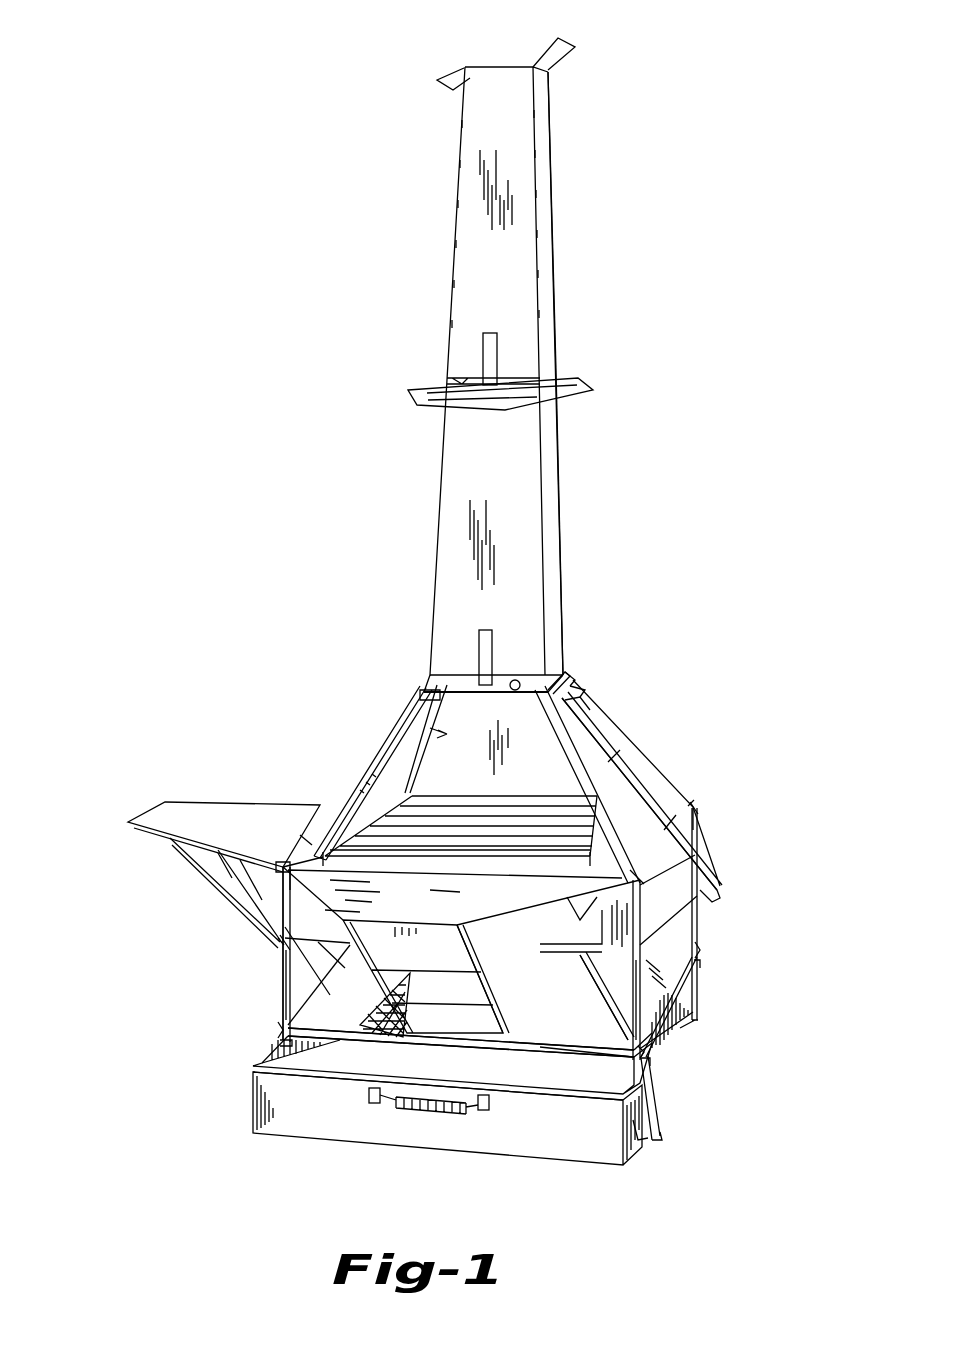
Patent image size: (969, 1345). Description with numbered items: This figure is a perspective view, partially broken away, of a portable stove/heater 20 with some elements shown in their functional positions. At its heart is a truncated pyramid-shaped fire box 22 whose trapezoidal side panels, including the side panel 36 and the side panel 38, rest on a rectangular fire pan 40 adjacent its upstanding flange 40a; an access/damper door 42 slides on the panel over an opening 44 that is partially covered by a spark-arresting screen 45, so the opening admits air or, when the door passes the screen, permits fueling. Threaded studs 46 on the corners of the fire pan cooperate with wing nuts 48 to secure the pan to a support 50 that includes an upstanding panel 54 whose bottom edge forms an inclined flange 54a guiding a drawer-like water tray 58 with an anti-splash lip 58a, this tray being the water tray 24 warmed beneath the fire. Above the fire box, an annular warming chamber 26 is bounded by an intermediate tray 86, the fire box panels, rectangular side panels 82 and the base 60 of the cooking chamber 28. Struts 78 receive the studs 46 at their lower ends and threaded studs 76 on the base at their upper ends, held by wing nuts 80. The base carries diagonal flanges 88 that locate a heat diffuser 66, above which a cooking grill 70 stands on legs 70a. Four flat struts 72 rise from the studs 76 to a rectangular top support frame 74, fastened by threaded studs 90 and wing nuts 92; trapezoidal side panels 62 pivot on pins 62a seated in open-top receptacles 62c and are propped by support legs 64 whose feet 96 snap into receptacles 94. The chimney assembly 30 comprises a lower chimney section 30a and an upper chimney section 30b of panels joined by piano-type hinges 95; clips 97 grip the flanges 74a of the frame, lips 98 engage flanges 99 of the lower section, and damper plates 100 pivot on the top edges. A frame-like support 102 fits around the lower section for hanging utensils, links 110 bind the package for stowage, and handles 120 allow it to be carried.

The stove/heater 20 is at (258, 268).
The fire box 22 is at (680, 934).
The rectangular water tray 24 is at (232, 1116).
The annular warming chamber 26 is at (498, 975).
The cooking chamber 28 is at (430, 728).
The chimney assembly 30 is at (614, 298).
The lower chimney section 30a is at (560, 520).
The upper chimney section 30b is at (552, 115).
The side panel 36 is at (675, 958).
The side panel 38 is at (320, 1000).
The fire pan 40 is at (566, 1075).
The upstanding flange 40a is at (492, 1052).
The access/damper door 42 is at (588, 1032).
The opening 44 is at (362, 1012).
The spark-arresting screen 45 is at (392, 1030).
The threaded studs 46 is at (270, 1030).
The wing nuts 48 is at (280, 1042).
The support 50 is at (710, 1023).
The upstanding panel 54 is at (680, 1028).
The inclined flange 54a is at (638, 1140).
The water tray 58 is at (598, 1165).
The anti-splash lip 58a is at (272, 1060).
The base 60 is at (367, 810).
The side panels 62 is at (457, 715).
The pins 62a is at (540, 920).
The open-top receptacles 62c is at (282, 862).
The support legs 64 is at (630, 747).
The heat diffuser 66 is at (470, 825).
The cooking grill 70 is at (538, 820).
The legs 70a is at (570, 872).
The flat struts 72 is at (407, 750).
The top support frame 74 is at (455, 685).
The laterally extending flanges 74a is at (512, 680).
The threaded stud 76 is at (700, 810).
The struts 78 is at (283, 960).
The wing nuts 80 is at (700, 805).
The side panels 82 is at (698, 830).
The intermediate tray 86 is at (590, 964).
The diagonal flanges 88 is at (302, 835).
The threaded studs 90 is at (568, 672).
The wing nuts 92 is at (574, 680).
The receptacles 94 is at (582, 689).
The feet 96 is at (582, 698).
The piano-type hinges 95 is at (528, 470).
The clips 97 is at (475, 655).
The lips 98 is at (487, 360).
The flanges 99 is at (448, 380).
The damper plates 100 is at (545, 52).
The frame-like support 102 is at (596, 395).
The links 110 is at (660, 1116).
The handles 120 is at (425, 1114).